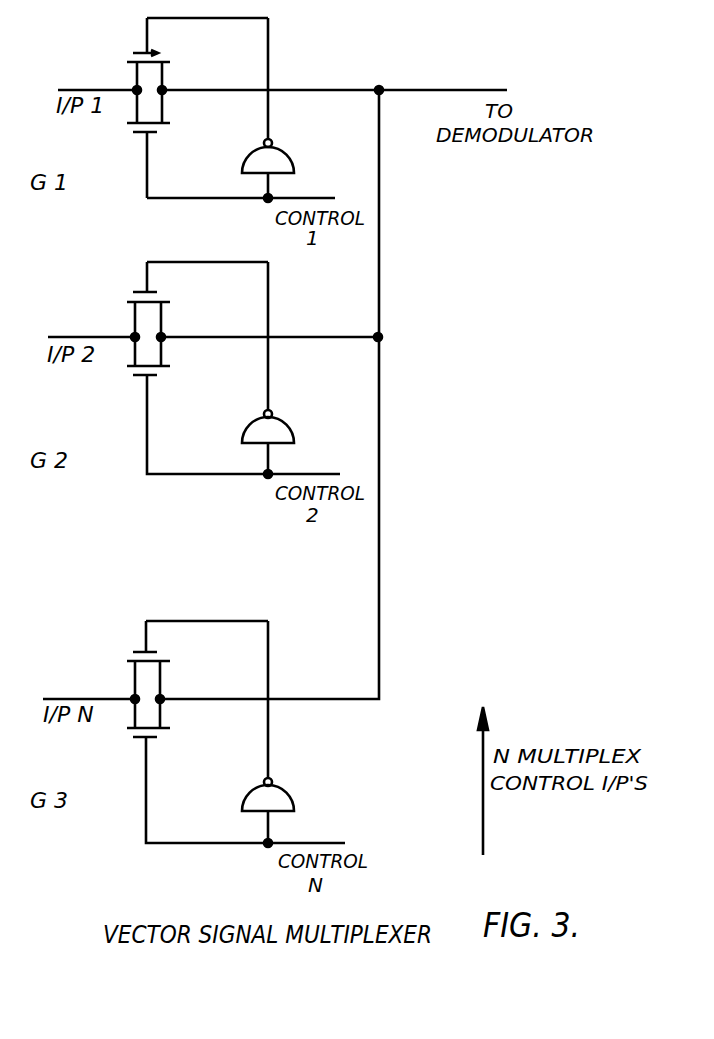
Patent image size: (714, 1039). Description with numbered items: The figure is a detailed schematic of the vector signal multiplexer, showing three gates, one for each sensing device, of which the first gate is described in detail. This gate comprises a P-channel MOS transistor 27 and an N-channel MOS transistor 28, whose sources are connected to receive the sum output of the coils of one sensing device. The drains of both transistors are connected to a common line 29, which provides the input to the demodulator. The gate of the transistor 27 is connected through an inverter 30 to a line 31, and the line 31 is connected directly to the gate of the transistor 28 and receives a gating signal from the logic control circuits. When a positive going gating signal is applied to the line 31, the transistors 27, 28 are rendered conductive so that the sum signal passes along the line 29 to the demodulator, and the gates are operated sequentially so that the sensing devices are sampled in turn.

The P-channel MOS transistor 27 is at (138, 48).
The N-channel MOS transistor 28 is at (162, 142).
The line 29 is at (343, 89).
The inverter 30 is at (290, 155).
The line 31 is at (208, 200).